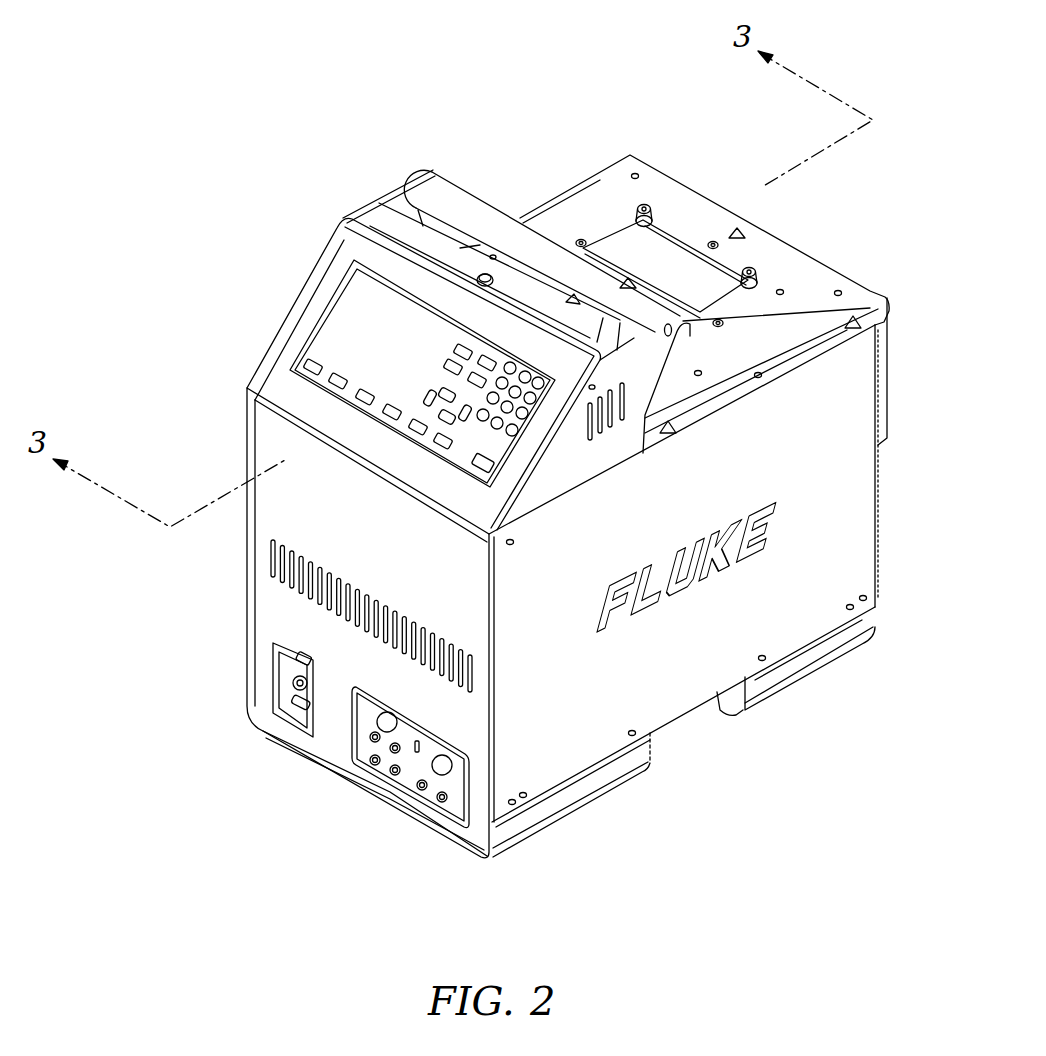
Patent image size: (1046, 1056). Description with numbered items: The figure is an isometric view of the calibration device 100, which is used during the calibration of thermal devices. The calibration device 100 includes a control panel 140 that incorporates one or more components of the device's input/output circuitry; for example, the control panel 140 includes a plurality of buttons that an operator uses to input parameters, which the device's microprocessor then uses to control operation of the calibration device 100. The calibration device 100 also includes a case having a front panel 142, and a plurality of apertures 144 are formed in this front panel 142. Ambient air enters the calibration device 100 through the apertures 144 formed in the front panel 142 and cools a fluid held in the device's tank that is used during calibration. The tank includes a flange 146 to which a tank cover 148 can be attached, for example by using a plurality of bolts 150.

The calibration device 100 is at (243, 78).
The control panel 140 is at (318, 313).
The front panel 142 is at (273, 506).
The apertures 144 is at (273, 570).
The flange 146 is at (574, 210).
The tank cover 148 is at (660, 243).
The bolts 150 is at (650, 205).